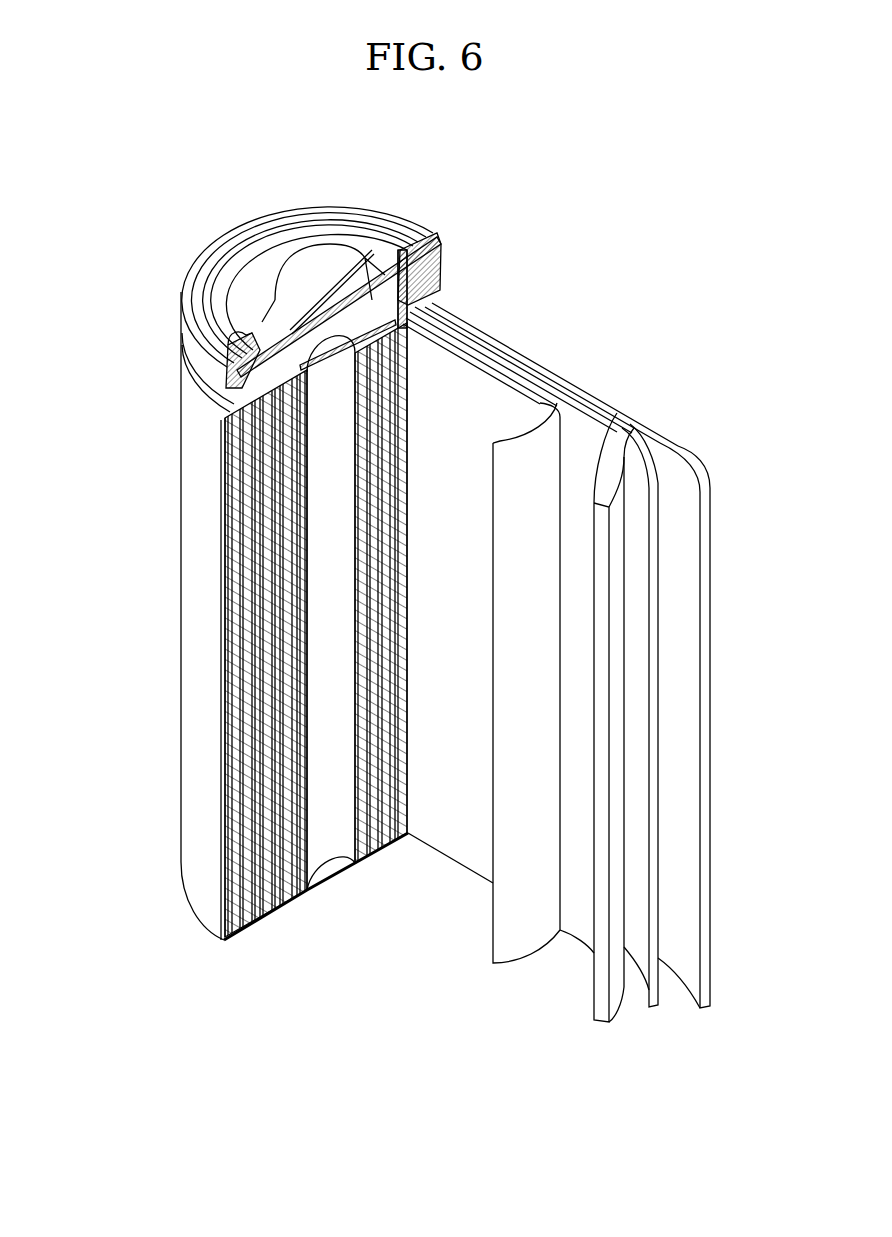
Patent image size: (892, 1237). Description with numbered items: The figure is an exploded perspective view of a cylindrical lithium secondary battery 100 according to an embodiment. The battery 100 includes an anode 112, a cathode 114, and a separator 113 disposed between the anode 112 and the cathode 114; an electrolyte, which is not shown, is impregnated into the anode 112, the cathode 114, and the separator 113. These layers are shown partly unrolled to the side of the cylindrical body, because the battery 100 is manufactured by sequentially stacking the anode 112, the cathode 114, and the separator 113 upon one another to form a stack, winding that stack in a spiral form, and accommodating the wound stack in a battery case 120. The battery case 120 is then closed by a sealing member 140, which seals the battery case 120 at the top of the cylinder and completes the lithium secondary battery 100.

The lithium secondary battery 100 is at (452, 166).
The anode 112 is at (690, 463).
The separator 113 is at (524, 452).
The cathode 114 is at (615, 457).
The battery case 120 is at (186, 617).
The sealing member 140 is at (304, 254).